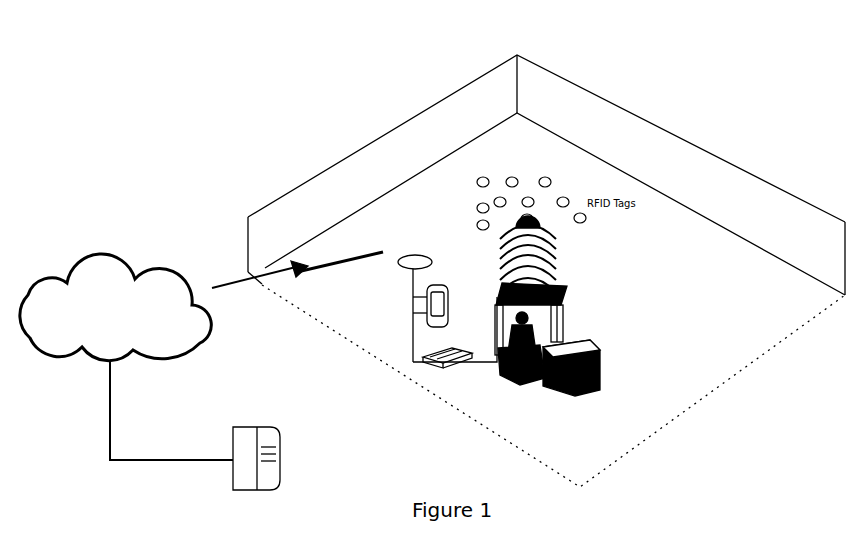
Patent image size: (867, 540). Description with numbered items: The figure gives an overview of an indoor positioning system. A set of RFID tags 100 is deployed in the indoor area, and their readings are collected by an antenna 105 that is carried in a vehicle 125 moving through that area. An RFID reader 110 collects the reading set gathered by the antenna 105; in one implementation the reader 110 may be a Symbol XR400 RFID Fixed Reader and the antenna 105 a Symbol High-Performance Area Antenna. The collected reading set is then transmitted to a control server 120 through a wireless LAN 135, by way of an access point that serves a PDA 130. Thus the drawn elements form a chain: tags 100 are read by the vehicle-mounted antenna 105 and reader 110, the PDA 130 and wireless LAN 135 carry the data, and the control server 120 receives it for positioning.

The RFID tags 100 is at (613, 137).
The antenna 105 is at (558, 227).
The RFID reader 110 is at (447, 353).
The control server 120 is at (233, 423).
The vehicle 125 is at (577, 335).
The PDA 130 is at (442, 230).
The wireless LAN 135 is at (90, 193).